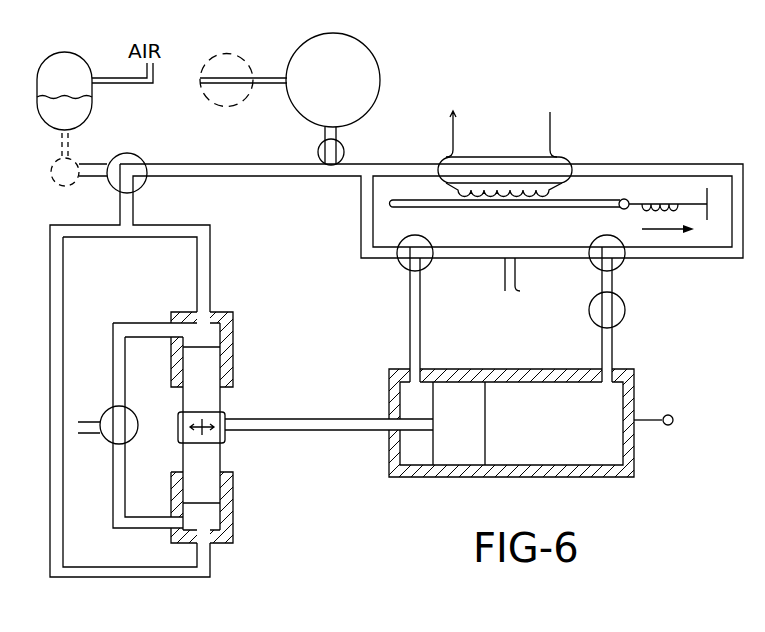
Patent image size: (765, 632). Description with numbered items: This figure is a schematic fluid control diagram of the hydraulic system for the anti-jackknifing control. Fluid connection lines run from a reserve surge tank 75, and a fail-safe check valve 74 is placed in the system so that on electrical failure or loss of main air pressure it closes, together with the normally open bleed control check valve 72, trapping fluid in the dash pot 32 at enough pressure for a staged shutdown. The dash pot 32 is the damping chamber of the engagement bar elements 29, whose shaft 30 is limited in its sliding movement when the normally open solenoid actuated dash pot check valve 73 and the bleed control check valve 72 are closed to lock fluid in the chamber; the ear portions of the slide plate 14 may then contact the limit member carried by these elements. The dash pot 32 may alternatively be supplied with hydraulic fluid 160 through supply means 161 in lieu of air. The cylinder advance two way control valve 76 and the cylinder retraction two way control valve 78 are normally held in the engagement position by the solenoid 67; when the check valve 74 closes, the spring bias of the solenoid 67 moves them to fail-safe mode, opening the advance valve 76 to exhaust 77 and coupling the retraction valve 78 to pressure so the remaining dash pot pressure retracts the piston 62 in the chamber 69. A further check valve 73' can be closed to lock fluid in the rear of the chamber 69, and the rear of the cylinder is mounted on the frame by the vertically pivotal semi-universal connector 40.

The hydraulic fluid 160 is at (88, 104).
The supply means 161 is at (51, 173).
The dash pot check valve 73 is at (146, 183).
The fail-safe check valve 74 is at (238, 28).
The reserve surge tank 75 is at (380, 80).
The slide plate 14 is at (344, 146).
The solenoid 67 is at (500, 216).
The cylinder retraction two way control valve 78 is at (426, 274).
The cylinder advance two way control valve 76 is at (624, 268).
The check valve 73' is at (637, 312).
The exhaust 77 is at (516, 304).
The chamber 69 is at (562, 436).
The piston 62 is at (463, 455).
The vertically pivotal connector 40 is at (674, 420).
The dash pot 32 is at (212, 336).
The shaft 30 is at (210, 395).
The engagement bar elements 29 is at (212, 437).
The bleed control check valve 72 is at (136, 437).